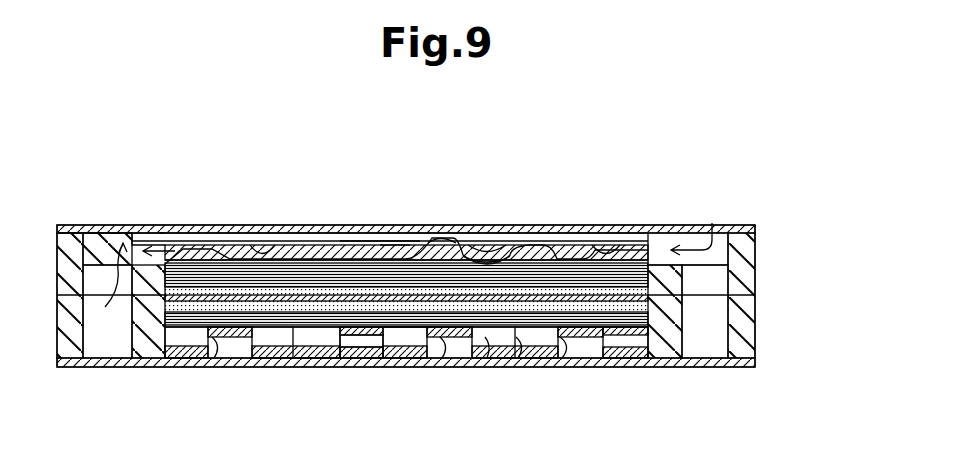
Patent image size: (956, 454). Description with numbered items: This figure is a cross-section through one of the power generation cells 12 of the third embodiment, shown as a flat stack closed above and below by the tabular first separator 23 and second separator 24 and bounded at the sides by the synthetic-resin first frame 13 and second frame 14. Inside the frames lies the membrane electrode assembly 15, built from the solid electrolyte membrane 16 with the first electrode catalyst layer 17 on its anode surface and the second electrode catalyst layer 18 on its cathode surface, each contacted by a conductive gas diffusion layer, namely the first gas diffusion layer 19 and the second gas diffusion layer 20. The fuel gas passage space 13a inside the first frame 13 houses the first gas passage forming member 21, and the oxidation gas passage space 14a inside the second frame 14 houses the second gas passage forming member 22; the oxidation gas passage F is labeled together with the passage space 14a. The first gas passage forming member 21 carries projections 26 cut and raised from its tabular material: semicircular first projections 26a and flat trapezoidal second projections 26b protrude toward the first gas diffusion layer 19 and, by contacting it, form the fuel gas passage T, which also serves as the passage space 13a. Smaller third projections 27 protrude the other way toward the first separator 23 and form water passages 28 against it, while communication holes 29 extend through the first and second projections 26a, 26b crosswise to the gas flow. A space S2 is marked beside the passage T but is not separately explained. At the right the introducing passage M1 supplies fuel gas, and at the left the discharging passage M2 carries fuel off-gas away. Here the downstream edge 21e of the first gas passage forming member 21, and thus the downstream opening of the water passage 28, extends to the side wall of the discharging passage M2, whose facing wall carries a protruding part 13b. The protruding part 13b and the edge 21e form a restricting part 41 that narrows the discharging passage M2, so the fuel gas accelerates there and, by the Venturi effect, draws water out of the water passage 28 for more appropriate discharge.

The power generation cell 12 is at (783, 223).
The first frame 13 is at (757, 238).
The passage space of fuel gas 13a is at (404, 193).
The protruding part 13b is at (97, 235).
The second frame 14 is at (757, 330).
The passage space of oxidation gas 14a is at (406, 387).
The membrane electrode assembly 15 is at (321, 328).
The solid electrolyte membrane 16 is at (428, 241).
The first electrode catalyst layer 17 is at (333, 240).
The second electrode catalyst layer 18 is at (365, 338).
The first gas diffusion layer 19 is at (523, 262).
The second gas diffusion layer 20 is at (598, 338).
The first gas passage forming member 21 is at (310, 246).
The downstream edge 21e is at (128, 237).
The second gas passage forming member 22 is at (633, 364).
The first separator 23 is at (660, 228).
The second separator 24 is at (157, 362).
The opening 26 is at (352, 364).
The first projections 26a is at (486, 249).
The second projections 26b is at (262, 245).
The third projections 27 is at (444, 236).
The water passage 28 is at (493, 257).
The communication hole 29 is at (295, 327).
The restricting part 41 is at (119, 236).
The fuel gas passage T is at (367, 242).
The bottom surface F is at (423, 340).
The second space S2 is at (400, 240).
The introducing passage M1 is at (707, 341).
The discharging passage M2 is at (120, 350).